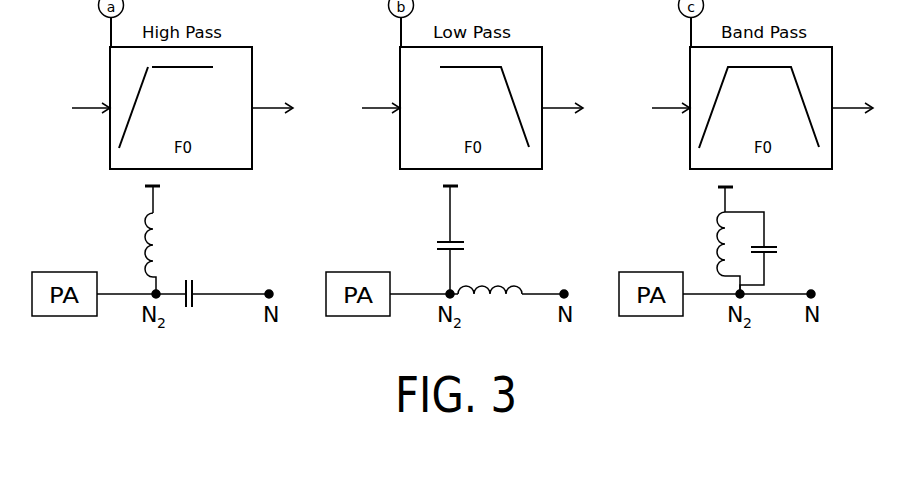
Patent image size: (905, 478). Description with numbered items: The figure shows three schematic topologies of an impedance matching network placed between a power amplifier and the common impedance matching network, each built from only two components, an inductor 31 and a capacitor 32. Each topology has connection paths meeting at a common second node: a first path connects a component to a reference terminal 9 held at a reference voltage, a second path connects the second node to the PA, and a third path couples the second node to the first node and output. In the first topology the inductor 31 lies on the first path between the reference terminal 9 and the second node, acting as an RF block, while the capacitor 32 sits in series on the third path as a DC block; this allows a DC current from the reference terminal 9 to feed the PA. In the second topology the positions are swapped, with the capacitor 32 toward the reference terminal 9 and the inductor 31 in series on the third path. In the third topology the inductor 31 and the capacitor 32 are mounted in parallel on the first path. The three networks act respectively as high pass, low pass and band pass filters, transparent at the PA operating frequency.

The reference terminal 9 is at (157, 188).
The inductor 31 is at (142, 220).
The capacitor 32 is at (198, 277).